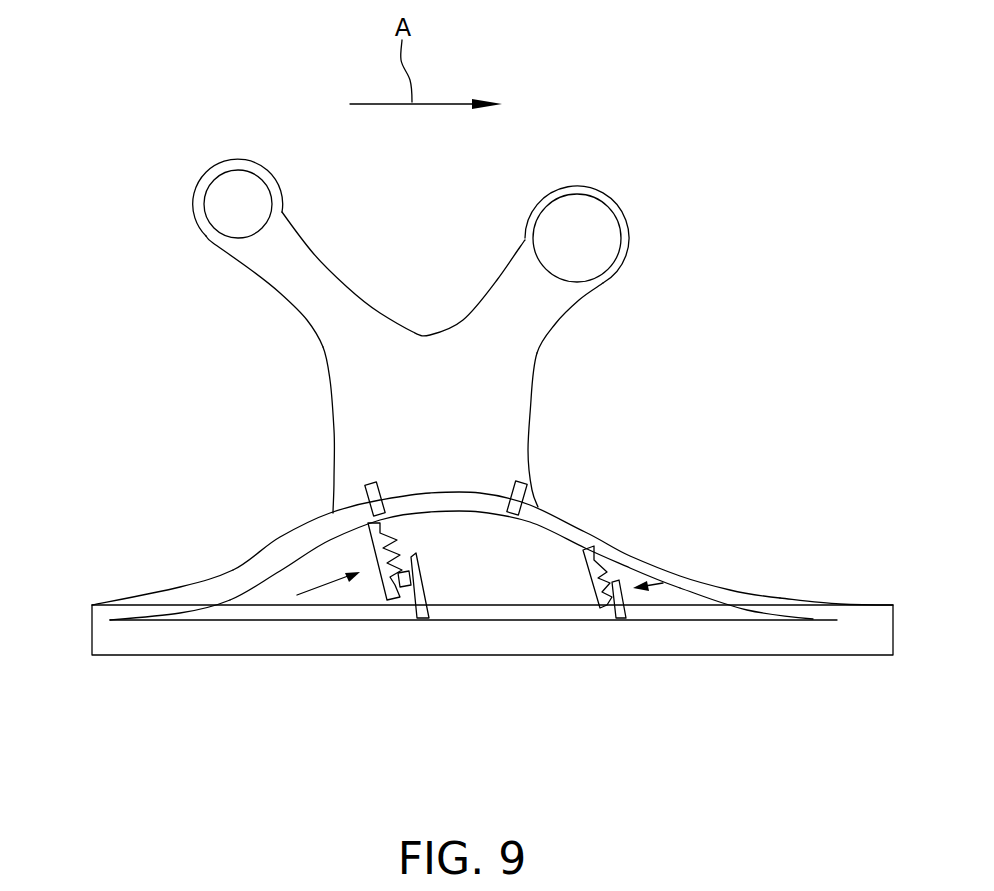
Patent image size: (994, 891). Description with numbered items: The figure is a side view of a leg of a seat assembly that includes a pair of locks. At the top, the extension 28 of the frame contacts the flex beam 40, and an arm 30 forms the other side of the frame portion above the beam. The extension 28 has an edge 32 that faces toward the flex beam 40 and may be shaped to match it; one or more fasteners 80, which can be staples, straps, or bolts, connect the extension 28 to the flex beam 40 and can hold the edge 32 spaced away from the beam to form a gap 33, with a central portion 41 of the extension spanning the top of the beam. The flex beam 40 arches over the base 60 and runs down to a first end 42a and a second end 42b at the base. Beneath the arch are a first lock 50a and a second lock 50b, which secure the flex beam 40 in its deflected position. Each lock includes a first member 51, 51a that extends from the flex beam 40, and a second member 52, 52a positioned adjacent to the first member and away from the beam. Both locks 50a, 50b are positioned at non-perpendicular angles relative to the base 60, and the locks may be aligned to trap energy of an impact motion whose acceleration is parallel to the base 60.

The extension 28 is at (338, 307).
The second arm 30 is at (500, 353).
The edge 32 is at (453, 493).
The gap 33 is at (473, 493).
The flex beam 40 is at (630, 557).
The central portion 41 is at (430, 500).
The first end of arched member 42a is at (103, 612).
The second end of arched member 42b is at (860, 615).
The first lock 50a is at (295, 596).
The second lock 50b is at (663, 583).
The first member 51 is at (377, 582).
The second resilient member 51a is at (590, 570).
The second member 52 is at (411, 603).
The second stop 52a is at (625, 618).
The base 60 is at (608, 642).
The fasteners 80 is at (367, 493).